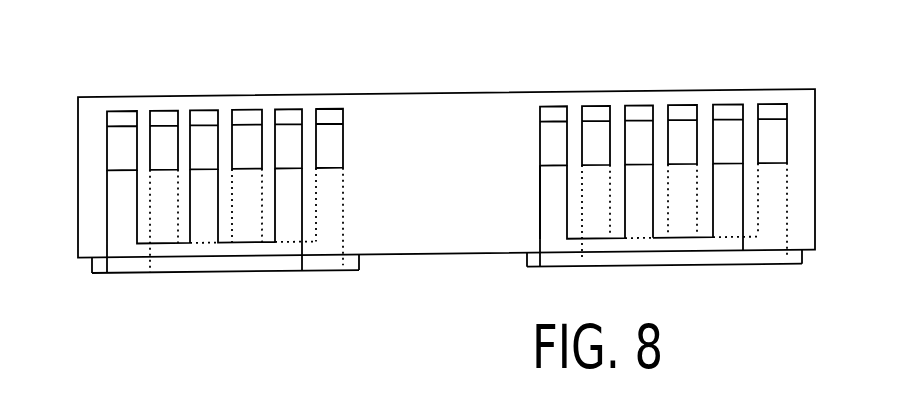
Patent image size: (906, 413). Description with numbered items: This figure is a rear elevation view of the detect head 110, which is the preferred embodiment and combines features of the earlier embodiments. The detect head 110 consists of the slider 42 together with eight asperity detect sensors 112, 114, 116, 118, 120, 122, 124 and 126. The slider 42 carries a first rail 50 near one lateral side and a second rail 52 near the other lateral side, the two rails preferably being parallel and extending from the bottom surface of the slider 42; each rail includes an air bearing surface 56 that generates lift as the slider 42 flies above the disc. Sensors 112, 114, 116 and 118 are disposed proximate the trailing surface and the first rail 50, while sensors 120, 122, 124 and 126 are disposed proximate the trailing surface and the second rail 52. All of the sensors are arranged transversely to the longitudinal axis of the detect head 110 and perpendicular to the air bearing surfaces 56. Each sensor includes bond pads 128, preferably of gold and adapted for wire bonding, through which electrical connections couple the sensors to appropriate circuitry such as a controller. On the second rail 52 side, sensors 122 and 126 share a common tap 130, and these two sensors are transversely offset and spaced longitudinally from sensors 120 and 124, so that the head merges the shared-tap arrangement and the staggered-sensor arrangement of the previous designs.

The slider 42 is at (387, 93).
The first rail 50 is at (127, 278).
The second rail 52 is at (533, 273).
The air bearing surfaces 56 is at (268, 278).
The detect head 110 is at (539, 67).
The asperity detect sensor 112 is at (100, 214).
The asperity detect sensor 114 is at (143, 188).
The asperity detect sensor 116 is at (308, 226).
The asperity detect sensor 118 is at (350, 178).
The asperity detect sensor 120 is at (531, 214).
The asperity detect sensor 122 is at (576, 190).
The asperity detect sensor 124 is at (752, 244).
The asperity detect sensor 126 is at (787, 202).
The bond pads 128 is at (188, 140).
The tap 130 is at (699, 175).